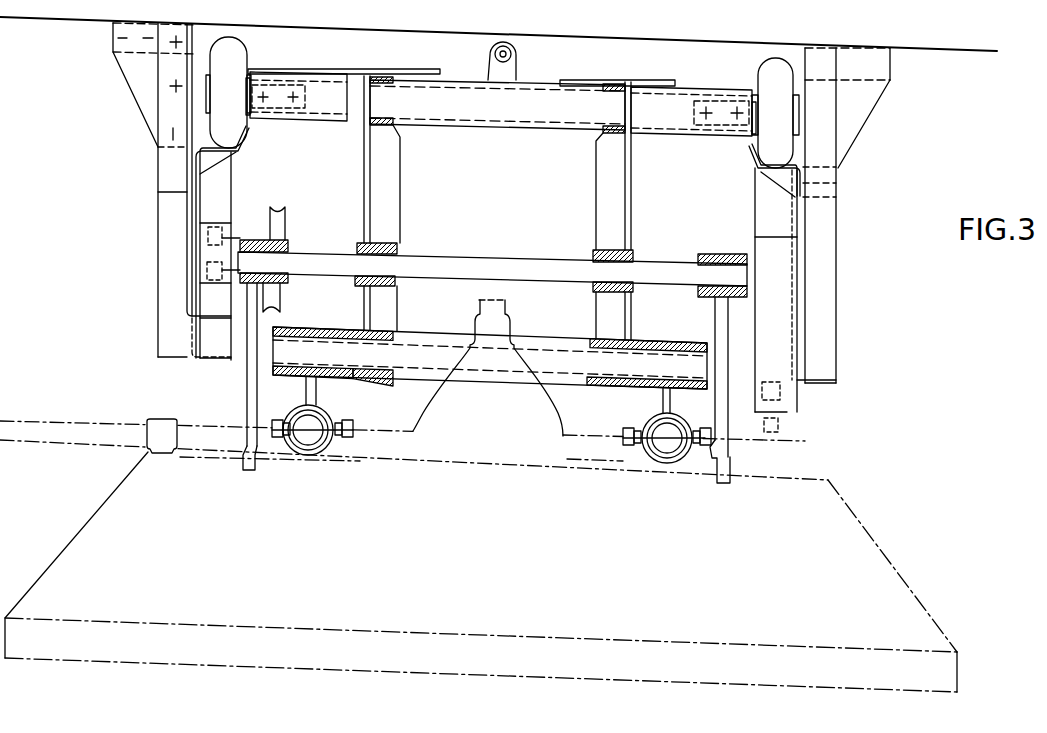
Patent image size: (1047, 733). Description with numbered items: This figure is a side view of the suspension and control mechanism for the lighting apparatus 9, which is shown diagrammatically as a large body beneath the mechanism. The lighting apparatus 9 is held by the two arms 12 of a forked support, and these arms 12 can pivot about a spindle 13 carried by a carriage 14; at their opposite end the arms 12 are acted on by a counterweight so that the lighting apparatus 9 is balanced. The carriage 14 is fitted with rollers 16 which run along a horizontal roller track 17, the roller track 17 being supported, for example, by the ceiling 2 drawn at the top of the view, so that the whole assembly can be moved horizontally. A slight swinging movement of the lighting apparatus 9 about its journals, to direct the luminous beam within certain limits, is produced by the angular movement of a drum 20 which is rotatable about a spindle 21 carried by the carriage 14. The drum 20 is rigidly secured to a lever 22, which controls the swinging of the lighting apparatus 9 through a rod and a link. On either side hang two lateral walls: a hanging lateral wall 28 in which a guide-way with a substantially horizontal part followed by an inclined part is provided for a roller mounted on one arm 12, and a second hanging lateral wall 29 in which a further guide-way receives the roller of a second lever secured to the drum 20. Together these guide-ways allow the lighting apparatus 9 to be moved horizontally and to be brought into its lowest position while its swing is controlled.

The ceiling 2 is at (967, 38).
The lighting apparatus 9 is at (878, 547).
The arms 12 is at (312, 438).
The spindle 13 is at (285, 353).
The carriage 14 is at (610, 210).
The rollers 16 is at (228, 63).
The roller track 17 is at (197, 152).
The drum 20 is at (279, 219).
The spindle 21 is at (412, 266).
The lever 22 is at (255, 399).
The hanging lateral wall 28 is at (777, 310).
The second hanging lateral wall 29 is at (203, 290).